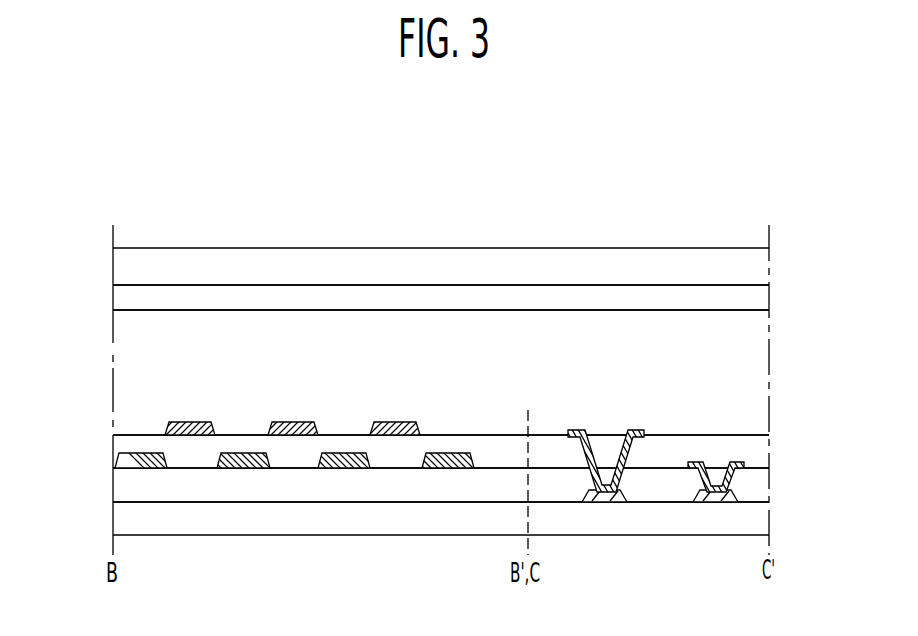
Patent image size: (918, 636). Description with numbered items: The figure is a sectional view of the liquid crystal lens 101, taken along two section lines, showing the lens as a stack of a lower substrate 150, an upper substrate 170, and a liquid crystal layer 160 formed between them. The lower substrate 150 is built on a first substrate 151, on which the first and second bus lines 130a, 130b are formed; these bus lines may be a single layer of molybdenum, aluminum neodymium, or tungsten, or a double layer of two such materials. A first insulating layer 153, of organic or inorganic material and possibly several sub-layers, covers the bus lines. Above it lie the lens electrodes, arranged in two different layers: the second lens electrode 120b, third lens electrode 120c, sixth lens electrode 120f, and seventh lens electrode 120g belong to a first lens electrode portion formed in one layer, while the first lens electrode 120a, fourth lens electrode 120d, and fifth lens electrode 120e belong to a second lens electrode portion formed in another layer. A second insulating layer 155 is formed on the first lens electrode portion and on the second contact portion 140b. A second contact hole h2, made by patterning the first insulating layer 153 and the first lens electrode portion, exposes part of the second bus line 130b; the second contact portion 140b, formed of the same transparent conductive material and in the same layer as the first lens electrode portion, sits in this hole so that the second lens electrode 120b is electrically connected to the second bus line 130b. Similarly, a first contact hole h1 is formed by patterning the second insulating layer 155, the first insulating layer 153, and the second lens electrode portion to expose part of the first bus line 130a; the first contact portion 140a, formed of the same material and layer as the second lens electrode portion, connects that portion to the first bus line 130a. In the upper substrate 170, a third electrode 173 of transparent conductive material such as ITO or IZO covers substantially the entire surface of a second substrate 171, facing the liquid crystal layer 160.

The liquid crystal lens 101 is at (446, 169).
The second substrate 171 is at (120, 268).
The third electrode 173 is at (120, 298).
The upper substrate 170 is at (775, 248).
The liquid crystal layer 160 is at (775, 310).
The lower substrate 150 is at (775, 435).
The second insulating layer 155 is at (120, 448).
The first insulating layer 153 is at (120, 485).
The first substrate 151 is at (120, 517).
The first lens electrode 120a is at (293, 436).
The second lens electrode 120b is at (343, 469).
The third lens electrode 120c is at (243, 469).
The fourth lens electrode 120d is at (395, 436).
The fifth lens electrode 120e is at (190, 436).
The sixth lens electrode 120f is at (447, 469).
The seventh lens electrode 120g is at (140, 469).
The first bus line 130a is at (603, 503).
The second bus line 130b is at (717, 503).
The first contact portion 140a is at (582, 429).
The second contact portion 140b is at (698, 461).
The first contact hole h1 is at (607, 440).
The second contact hole h2 is at (720, 466).